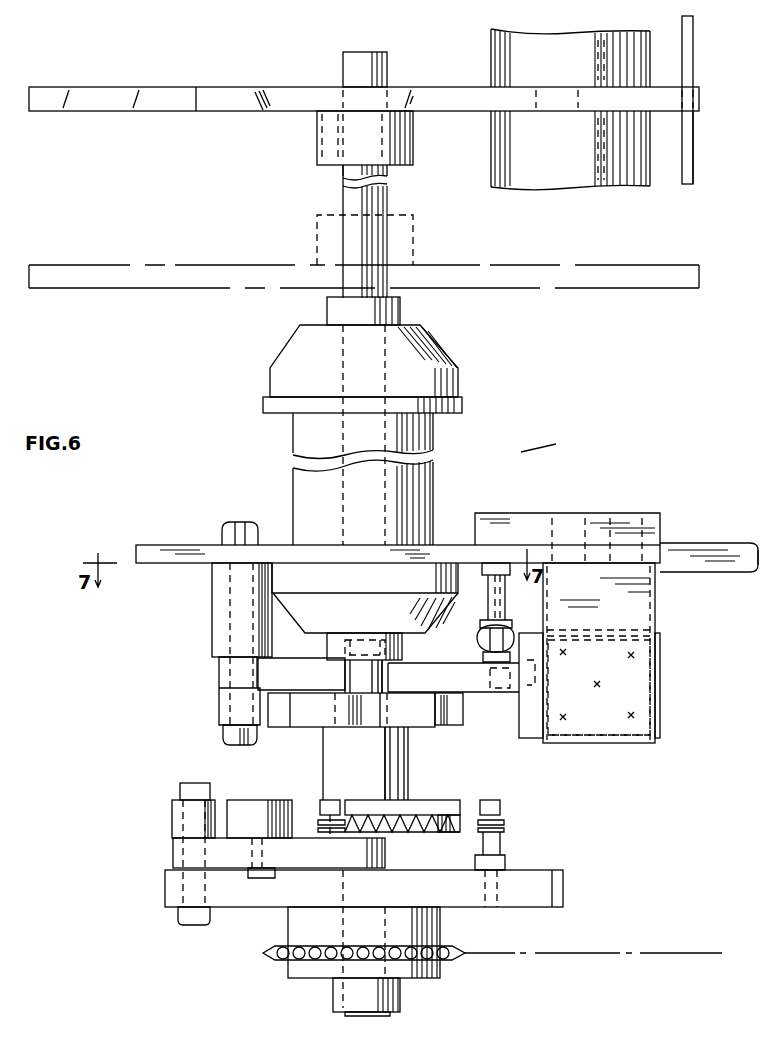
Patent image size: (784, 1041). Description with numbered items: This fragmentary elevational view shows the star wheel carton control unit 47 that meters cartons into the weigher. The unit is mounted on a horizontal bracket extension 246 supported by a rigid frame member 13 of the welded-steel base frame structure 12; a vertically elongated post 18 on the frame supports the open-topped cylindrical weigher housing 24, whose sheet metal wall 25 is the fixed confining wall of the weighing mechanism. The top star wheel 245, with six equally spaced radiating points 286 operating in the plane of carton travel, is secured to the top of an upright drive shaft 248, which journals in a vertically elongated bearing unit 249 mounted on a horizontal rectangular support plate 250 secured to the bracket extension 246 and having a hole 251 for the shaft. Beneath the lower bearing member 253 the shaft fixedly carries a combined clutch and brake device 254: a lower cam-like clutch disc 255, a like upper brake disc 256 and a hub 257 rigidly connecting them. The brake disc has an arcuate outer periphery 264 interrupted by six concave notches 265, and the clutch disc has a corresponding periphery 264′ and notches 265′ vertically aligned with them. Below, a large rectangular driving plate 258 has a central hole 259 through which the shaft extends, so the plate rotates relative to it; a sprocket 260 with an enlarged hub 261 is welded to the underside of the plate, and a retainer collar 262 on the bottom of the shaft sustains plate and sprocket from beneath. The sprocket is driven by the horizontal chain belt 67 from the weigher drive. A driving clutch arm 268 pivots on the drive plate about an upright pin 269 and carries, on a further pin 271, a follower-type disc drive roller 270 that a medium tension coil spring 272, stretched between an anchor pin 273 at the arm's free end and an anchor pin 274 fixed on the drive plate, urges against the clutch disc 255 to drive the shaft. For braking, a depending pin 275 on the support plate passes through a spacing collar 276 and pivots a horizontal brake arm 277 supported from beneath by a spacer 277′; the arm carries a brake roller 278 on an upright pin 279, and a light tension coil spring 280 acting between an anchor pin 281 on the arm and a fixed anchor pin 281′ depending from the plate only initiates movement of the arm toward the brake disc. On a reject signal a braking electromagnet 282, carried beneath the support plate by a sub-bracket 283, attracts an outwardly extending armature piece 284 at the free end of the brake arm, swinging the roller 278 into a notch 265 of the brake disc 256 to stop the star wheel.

The radiating points 286 is at (168, 93).
The top star wheel member 245 is at (266, 111).
The upright drive shaft 248 is at (385, 190).
The vertically elongated post 18 is at (543, 180).
The sheet metal wall 25 is at (694, 55).
The weigher housing 24 is at (694, 129).
The bearing unit 249 is at (436, 474).
The star wheel unit 47 is at (521, 452).
The support plate 250 is at (196, 561).
The bracket extension 246 is at (668, 522).
The rigid frame members 13 is at (740, 568).
The base frame structure 12 is at (755, 582).
The sub-bracket 283 is at (648, 619).
The armature piece 284 is at (662, 702).
The braking electromagnet 282 is at (656, 731).
The anchor pin 281 is at (502, 561).
The fixed anchor pin 281′ is at (506, 626).
The light tension coil spring 280 is at (513, 638).
The hole 251 is at (352, 581).
The lower bearing member 253 is at (290, 615).
The upright pin 279 is at (403, 646).
The spacing collar 276 is at (214, 608).
The depending pin 275 is at (230, 630).
The spacer 277′ is at (222, 703).
The brake arm 277 is at (428, 680).
The brake roller 278 is at (437, 678).
The arcuate outer periphery 264 is at (320, 703).
The recesses or notches 265 is at (358, 717).
The upper brake disc 256 is at (468, 703).
The combined clutch and brake device 254 is at (316, 761).
The hub 257 is at (400, 766).
The outer periphery of clutch disc 264′ is at (418, 805).
The medium tension coil spring 272 is at (402, 833).
The lower clutch disc 255 is at (440, 833).
The recesses or notches of clutch disc 265′ is at (305, 793).
The anchor pin 273 is at (333, 803).
The anchor pin 274 is at (503, 848).
The disc drive roller 270 is at (250, 805).
The driving clutch arm 268 is at (215, 853).
The pin 271 is at (262, 853).
The upright pin 269 is at (172, 886).
The driving plate 258 is at (278, 895).
The hub of sprocket 261 is at (437, 924).
The central hole 259 is at (348, 909).
The sprocket 260 is at (283, 962).
The retainer collar 262 is at (338, 1000).
The chain belt 67 is at (620, 958).